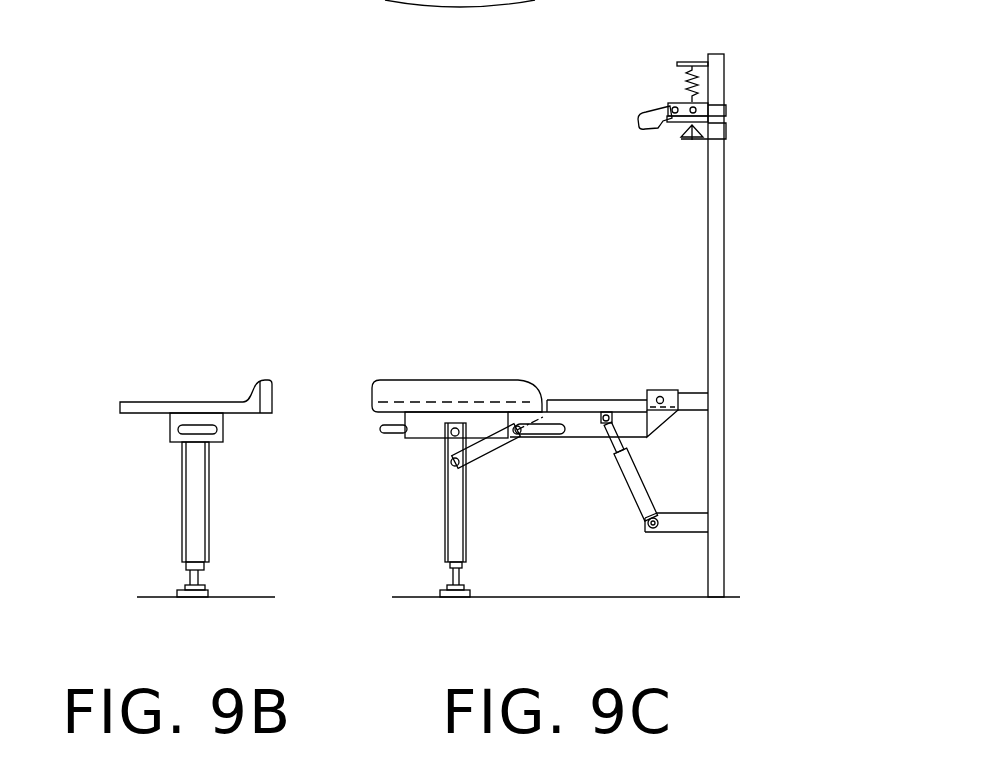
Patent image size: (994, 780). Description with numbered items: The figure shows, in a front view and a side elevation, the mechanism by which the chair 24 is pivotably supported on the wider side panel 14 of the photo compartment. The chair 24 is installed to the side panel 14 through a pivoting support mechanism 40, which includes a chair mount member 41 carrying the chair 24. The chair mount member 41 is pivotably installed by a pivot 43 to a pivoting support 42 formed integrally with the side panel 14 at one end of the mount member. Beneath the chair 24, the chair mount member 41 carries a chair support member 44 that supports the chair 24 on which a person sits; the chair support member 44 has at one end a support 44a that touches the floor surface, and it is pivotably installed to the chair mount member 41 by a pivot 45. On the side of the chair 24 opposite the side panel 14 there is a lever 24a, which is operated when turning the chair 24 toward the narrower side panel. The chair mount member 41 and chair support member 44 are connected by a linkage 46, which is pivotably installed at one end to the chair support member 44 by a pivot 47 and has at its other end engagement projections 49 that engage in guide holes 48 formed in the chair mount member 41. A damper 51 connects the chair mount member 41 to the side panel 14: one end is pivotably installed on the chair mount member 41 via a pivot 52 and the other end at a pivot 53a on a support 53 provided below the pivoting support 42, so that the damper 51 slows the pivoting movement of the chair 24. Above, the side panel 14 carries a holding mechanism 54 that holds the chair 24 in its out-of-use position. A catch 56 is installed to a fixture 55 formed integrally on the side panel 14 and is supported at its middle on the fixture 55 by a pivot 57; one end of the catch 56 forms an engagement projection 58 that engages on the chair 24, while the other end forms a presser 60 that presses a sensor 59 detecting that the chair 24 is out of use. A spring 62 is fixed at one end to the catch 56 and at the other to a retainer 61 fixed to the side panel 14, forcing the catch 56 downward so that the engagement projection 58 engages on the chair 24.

In FIG. 9C, the wider side panel 14 is at (724, 250).
In FIG. 9B, the chair 24 is at (132, 402).
In FIG. 9B, the lever 24a is at (172, 440).
In FIG. 9C, the lever 24a is at (378, 428).
In FIG. 9C, the pivoting support mechanism 40 is at (574, 494).
In FIG. 9C, the chair mount member 41 is at (585, 438).
In FIG. 9C, the pivoting support 42 is at (702, 402).
In FIG. 9C, the pivot 43 is at (663, 397).
In FIG. 9B, the chair support member 44 is at (183, 527).
In FIG. 9C, the chair support member 44 is at (458, 538).
In FIG. 9C, the support 44a is at (440, 600).
In FIG. 9C, the pivot 45 is at (442, 434).
In FIG. 9C, the linkage 46 is at (483, 450).
In FIG. 9C, the pivot 47 is at (448, 465).
In FIG. 9C, the guide holes 48 is at (555, 437).
In FIG. 9C, the engagement projections 49 is at (517, 428).
In FIG. 9C, the damper 51 is at (641, 473).
In FIG. 9C, the pivot 52 is at (600, 426).
In FIG. 9C, the support 53 is at (685, 533).
In FIG. 9C, the pivot 53a is at (652, 535).
In FIG. 9C, the holding mechanism 54 is at (698, 109).
In FIG. 9C, the fixture 55 is at (707, 123).
In FIG. 9C, the catch 56 is at (660, 128).
In FIG. 9C, the pivot 57 is at (670, 104).
In FIG. 9C, the engagement projection 58 is at (645, 130).
In FIG. 9C, the sensor 59 is at (688, 137).
In FIG. 9C, the presser 60 is at (708, 115).
In FIG. 9C, the retainer 61 is at (678, 60).
In FIG. 9C, the spring 62 is at (700, 80).